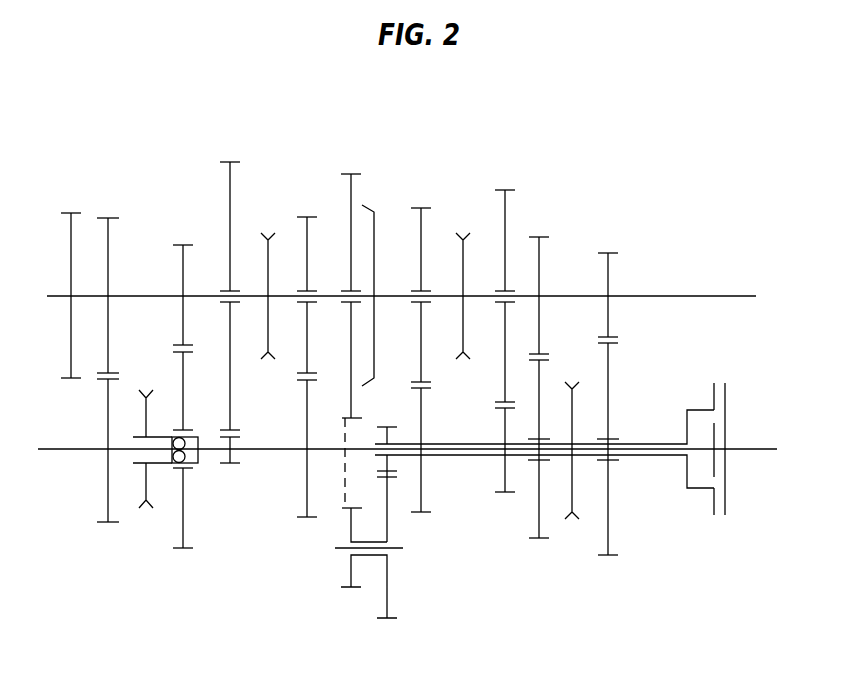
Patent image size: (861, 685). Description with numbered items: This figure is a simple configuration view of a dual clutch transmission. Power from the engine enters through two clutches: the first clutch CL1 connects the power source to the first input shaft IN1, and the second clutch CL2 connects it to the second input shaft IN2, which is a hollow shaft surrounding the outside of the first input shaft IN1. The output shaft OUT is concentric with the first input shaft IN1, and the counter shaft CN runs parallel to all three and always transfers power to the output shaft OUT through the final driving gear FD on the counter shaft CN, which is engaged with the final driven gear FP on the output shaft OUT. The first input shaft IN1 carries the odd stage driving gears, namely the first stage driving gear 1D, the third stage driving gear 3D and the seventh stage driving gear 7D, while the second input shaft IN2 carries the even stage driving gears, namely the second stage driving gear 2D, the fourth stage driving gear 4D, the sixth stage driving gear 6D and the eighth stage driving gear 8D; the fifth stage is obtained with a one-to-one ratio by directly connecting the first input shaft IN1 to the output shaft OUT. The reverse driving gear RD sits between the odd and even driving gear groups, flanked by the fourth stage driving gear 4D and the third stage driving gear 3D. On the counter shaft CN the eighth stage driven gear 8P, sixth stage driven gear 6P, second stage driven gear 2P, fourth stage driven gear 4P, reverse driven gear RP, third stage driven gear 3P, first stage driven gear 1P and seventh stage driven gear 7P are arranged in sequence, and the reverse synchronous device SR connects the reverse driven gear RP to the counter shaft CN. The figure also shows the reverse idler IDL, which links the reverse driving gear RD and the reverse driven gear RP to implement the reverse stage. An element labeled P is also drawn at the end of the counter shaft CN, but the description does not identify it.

The counter shaft CN is at (686, 295).
The output shaft OUT is at (60, 450).
The first input shaft IN1 is at (663, 441).
The second input shaft IN2 is at (650, 457).
The first clutch CL1 is at (716, 465).
The second clutch CL2 is at (716, 395).
The parking gear P is at (71, 285).
The final driving gear FD is at (108, 284).
The final driven gear FP is at (107, 462).
The seventh stage driven gear 7P is at (183, 327).
The seventh stage driving gear 7D is at (184, 504).
The first stage driven gear 1P is at (230, 284).
The first stage driving gear 1D is at (232, 463).
The third stage driven gear 3P is at (308, 284).
The third stage driving gear 3D is at (308, 462).
The reverse driven gear RP is at (350, 329).
The reverse synchronous device SR is at (366, 205).
The reverse driving gear RD is at (397, 470).
The reverse idler IDL is at (369, 577).
The fourth stage driven gear 4P is at (421, 284).
The fourth stage driving gear 4D is at (422, 462).
The second stage driven gear 2P is at (505, 284).
The second stage driving gear 2D is at (505, 462).
The sixth stage driven gear 6P is at (539, 327).
The sixth stage driving gear 6D is at (539, 500).
The eighth stage driven gear 8P is at (608, 335).
The eighth stage driving gear 8D is at (609, 510).